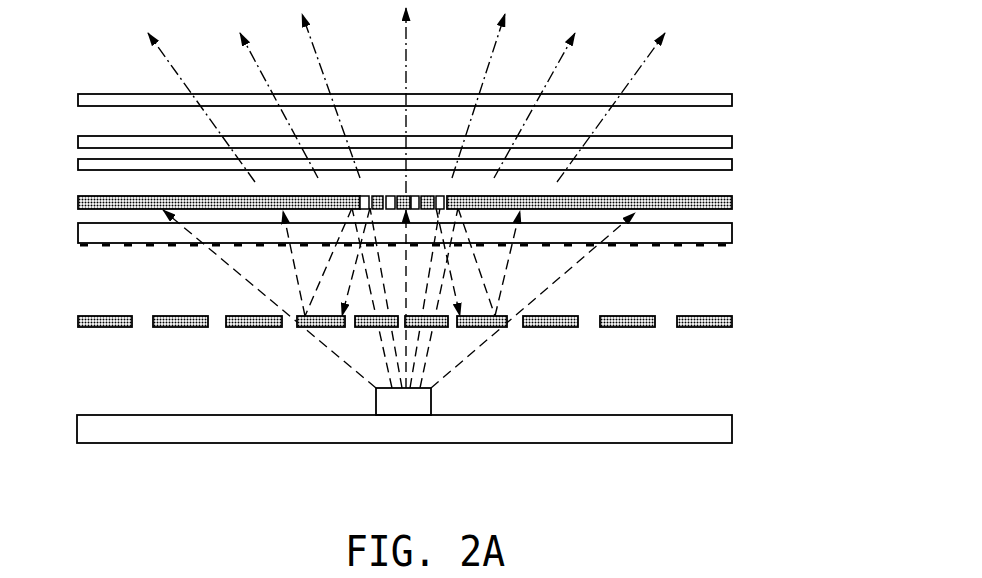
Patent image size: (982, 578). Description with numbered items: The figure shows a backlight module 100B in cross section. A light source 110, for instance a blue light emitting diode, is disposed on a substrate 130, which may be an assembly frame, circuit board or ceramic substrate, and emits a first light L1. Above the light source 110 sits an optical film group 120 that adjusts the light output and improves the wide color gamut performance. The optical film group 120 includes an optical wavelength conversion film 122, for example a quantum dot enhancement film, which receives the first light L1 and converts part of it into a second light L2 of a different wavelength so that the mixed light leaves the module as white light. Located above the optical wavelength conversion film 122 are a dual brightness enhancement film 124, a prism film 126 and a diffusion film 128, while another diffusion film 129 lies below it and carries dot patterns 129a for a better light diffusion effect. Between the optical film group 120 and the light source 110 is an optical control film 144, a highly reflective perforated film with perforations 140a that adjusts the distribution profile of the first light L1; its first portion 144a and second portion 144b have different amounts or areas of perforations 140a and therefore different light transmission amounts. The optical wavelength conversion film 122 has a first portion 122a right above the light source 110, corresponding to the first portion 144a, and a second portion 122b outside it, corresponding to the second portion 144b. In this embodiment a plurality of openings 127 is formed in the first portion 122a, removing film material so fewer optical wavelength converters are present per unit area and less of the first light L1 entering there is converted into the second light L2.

The optical film group 120 is at (75, 94).
The dual brightness enhancement film 124 is at (718, 106).
The prism film 126 is at (718, 147).
The diffusion film 128 is at (718, 168).
The optical wavelength conversion film 122 is at (455, 130).
The first portion of the optical wavelength conversion film 122a is at (348, 194).
The second portion of the optical wavelength conversion film 122b is at (348, 194).
The openings 127 is at (390, 195).
The diffusion film 129 is at (463, 256).
The dot patterns 129a is at (718, 248).
The first light L1 is at (560, 283).
The second light L2 is at (645, 68).
The optical control film 144 is at (455, 346).
The first portion of the optical control film 144a is at (457, 332).
The second portion of the optical control film 144b is at (348, 332).
The perforations 140a is at (142, 316).
The light source 110 is at (425, 398).
The substrate 130 is at (718, 432).
The backlight module 100B is at (702, 495).